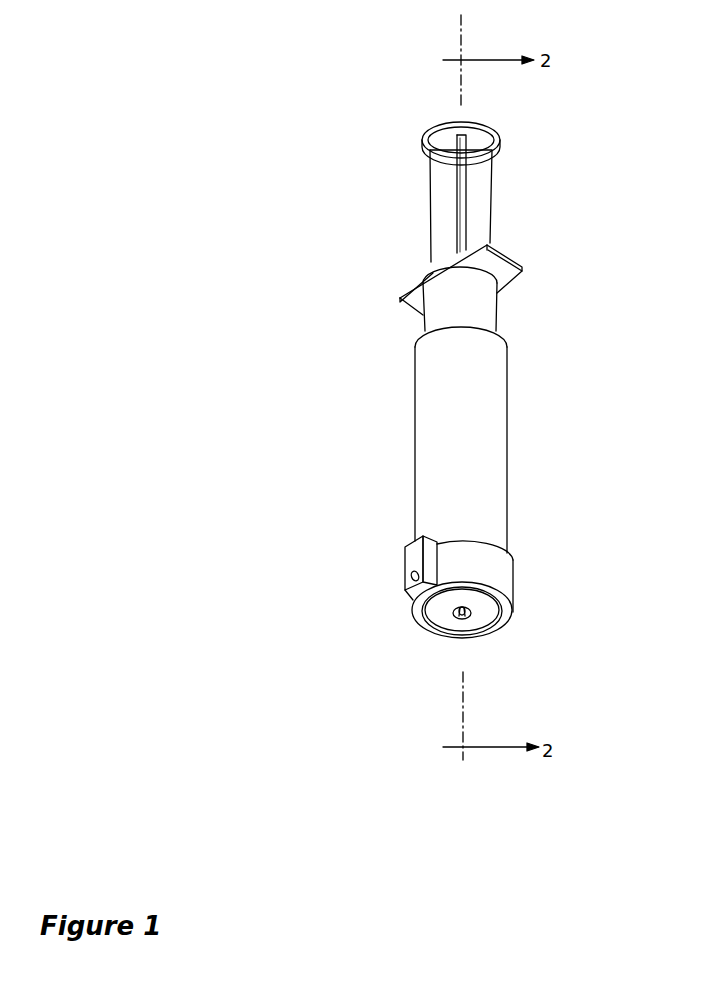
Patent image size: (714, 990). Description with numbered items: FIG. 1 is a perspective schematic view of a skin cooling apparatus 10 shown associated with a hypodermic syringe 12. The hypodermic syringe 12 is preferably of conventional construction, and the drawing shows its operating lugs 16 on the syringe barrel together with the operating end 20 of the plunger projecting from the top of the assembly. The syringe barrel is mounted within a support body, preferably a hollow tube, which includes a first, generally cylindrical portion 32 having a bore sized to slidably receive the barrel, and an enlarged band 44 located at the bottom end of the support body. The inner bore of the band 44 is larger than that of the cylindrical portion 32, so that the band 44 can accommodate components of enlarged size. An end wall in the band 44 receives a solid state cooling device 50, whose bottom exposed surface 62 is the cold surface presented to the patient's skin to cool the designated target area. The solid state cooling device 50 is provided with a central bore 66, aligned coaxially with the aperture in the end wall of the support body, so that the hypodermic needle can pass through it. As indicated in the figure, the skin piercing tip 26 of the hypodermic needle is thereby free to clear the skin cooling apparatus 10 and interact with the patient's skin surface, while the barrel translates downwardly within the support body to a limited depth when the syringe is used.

The skin cooling apparatus 10 is at (507, 410).
The hypodermic syringe 12 is at (503, 138).
The operating lugs 16 is at (505, 270).
The operating end 20 is at (437, 124).
The skin piercing tip 26 is at (462, 618).
The first generally cylindrical portion 32 is at (435, 465).
The enlarged band 44 is at (497, 572).
The solid state cooling device 50 is at (516, 621).
The bottom exposed surface 62 is at (435, 613).
The central bore 66 is at (468, 618).